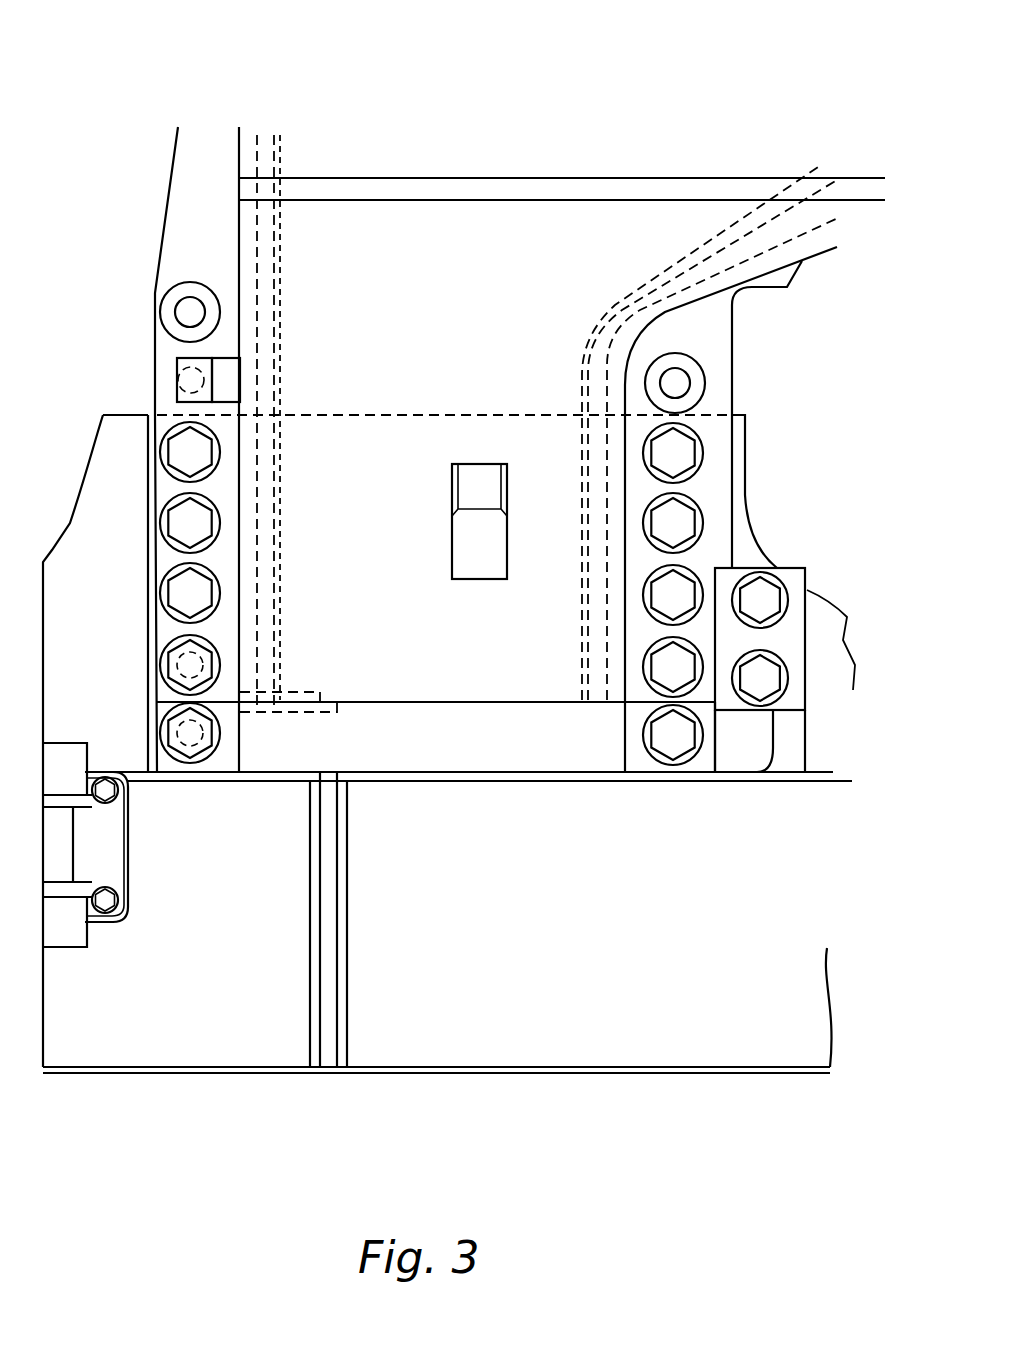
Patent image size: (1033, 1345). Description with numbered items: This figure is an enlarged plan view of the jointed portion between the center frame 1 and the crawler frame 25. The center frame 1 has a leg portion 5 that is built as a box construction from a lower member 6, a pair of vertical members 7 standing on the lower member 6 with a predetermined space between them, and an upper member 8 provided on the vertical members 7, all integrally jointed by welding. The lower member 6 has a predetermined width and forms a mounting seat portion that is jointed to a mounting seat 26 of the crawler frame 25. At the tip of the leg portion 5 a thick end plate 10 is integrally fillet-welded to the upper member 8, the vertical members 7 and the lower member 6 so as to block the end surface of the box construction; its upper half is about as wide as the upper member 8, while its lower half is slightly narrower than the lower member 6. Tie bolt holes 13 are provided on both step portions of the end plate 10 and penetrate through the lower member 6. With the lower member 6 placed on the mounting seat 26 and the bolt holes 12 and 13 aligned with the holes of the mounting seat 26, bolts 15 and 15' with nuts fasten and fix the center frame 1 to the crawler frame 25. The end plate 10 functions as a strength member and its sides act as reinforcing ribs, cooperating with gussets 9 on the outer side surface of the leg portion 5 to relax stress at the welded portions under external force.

The center frame 1 is at (288, 80).
The leg portion 5 is at (348, 340).
The lower member 6 is at (713, 403).
The vertical members 7 is at (267, 437).
The upper member 8 is at (567, 530).
The gussets 9 is at (187, 360).
The end plate 10 is at (481, 745).
The bolt holes 12 is at (185, 666).
The tie bolt holes 13 is at (190, 750).
The bolts 15 is at (769, 666).
The bolts 15' is at (712, 781).
The crawler frame 25 is at (603, 1030).
The mounting seat 26 is at (120, 525).